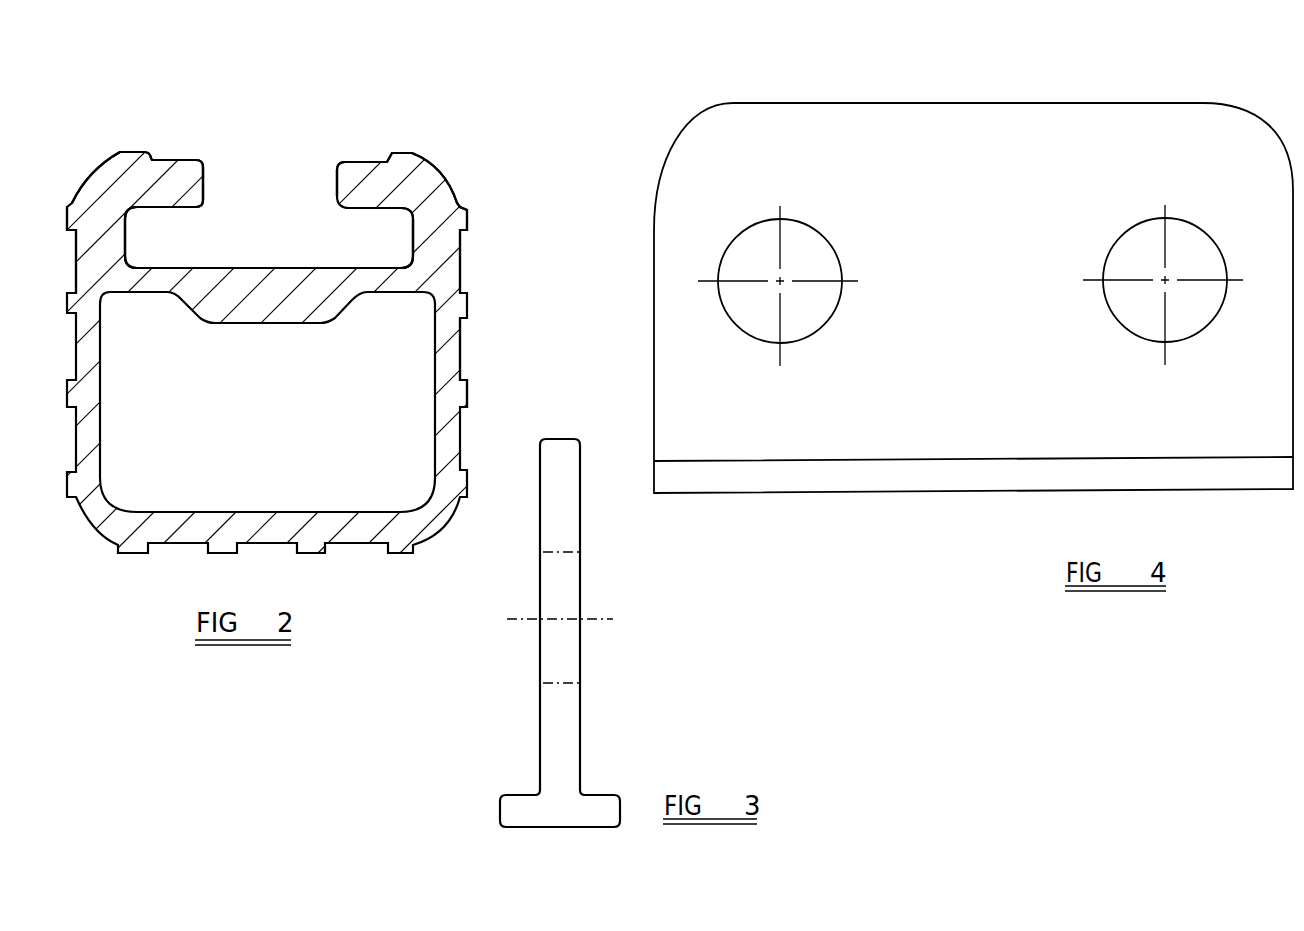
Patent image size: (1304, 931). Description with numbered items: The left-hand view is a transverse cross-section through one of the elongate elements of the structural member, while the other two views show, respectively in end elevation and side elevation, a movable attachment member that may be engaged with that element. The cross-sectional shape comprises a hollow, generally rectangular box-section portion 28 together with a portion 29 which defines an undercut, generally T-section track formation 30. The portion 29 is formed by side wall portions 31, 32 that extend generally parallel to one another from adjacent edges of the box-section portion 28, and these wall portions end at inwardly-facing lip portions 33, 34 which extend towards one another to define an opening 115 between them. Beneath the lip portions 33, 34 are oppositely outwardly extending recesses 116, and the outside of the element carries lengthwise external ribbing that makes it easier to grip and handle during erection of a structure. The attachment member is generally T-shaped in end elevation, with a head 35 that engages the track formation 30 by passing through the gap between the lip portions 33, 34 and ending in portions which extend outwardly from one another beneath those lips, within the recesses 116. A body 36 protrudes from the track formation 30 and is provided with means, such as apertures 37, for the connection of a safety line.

In FIG. 2, the box-section portion 28 is at (445, 167).
In FIG. 2, the track portion 29 is at (469, 371).
In FIG. 2, the T-section track formation 30 is at (287, 188).
In FIG. 2, the side wall portion 31 is at (112, 250).
In FIG. 2, the side wall portion 32 is at (447, 228).
In FIG. 2, the lip portion 33 is at (187, 182).
In FIG. 2, the lip portion 34 is at (395, 168).
In FIG. 3, the head 35 is at (606, 813).
In FIG. 4, the head 35 is at (912, 475).
In FIG. 3, the body 36 is at (563, 506).
In FIG. 4, the body 36 is at (1027, 128).
In FIG. 4, the aperture 37 is at (795, 250).
In FIG. 2, the opening 115 is at (223, 178).
In FIG. 2, the recess 116 is at (388, 240).